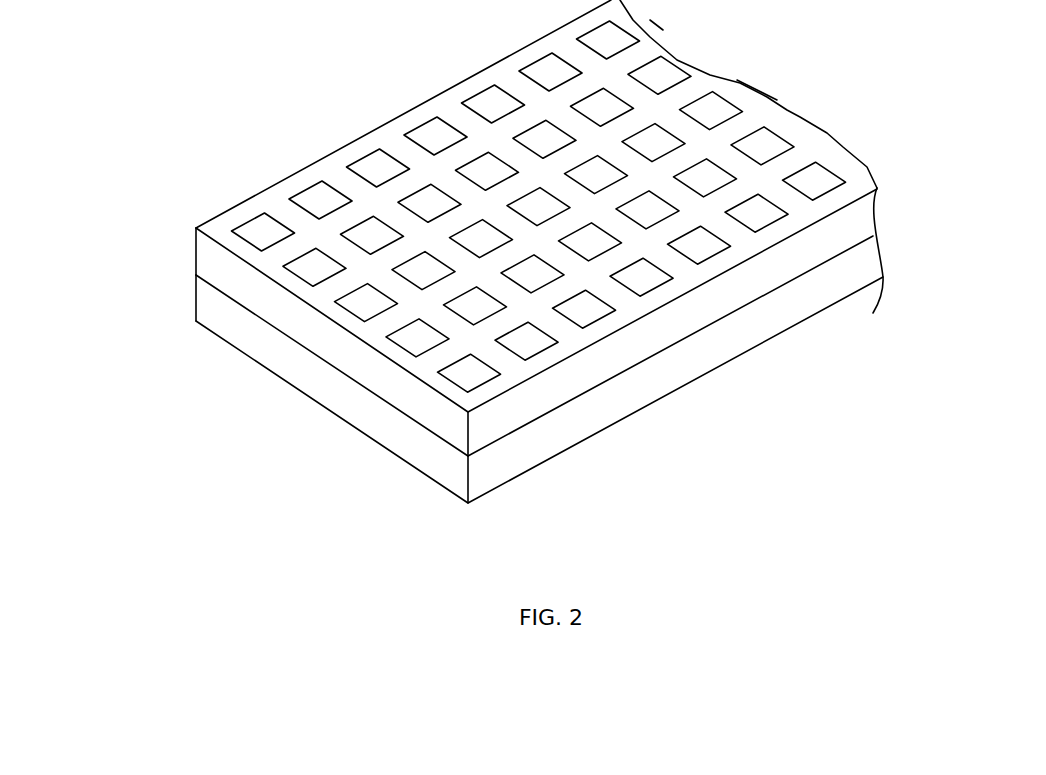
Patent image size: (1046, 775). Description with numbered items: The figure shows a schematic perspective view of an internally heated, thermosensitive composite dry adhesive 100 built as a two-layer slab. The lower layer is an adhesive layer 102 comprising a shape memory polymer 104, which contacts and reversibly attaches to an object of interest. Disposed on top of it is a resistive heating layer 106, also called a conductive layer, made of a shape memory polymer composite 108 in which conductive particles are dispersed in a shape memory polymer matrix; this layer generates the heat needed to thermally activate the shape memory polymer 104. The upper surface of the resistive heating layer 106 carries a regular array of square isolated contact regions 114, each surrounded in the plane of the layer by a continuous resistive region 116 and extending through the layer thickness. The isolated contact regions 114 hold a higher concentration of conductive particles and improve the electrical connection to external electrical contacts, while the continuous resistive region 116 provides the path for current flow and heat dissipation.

The internally heated thermosensitive composite dry adhesive 100 is at (265, 51).
The adhesive layer 102 is at (486, 389).
The shape memory polymer 104 is at (217, 335).
The resistive heating layer 106 is at (483, 237).
The shape memory polymer composite 108 is at (195, 257).
The isolated contact regions 114 is at (262, 222).
The continuous resistive region 116 is at (332, 170).